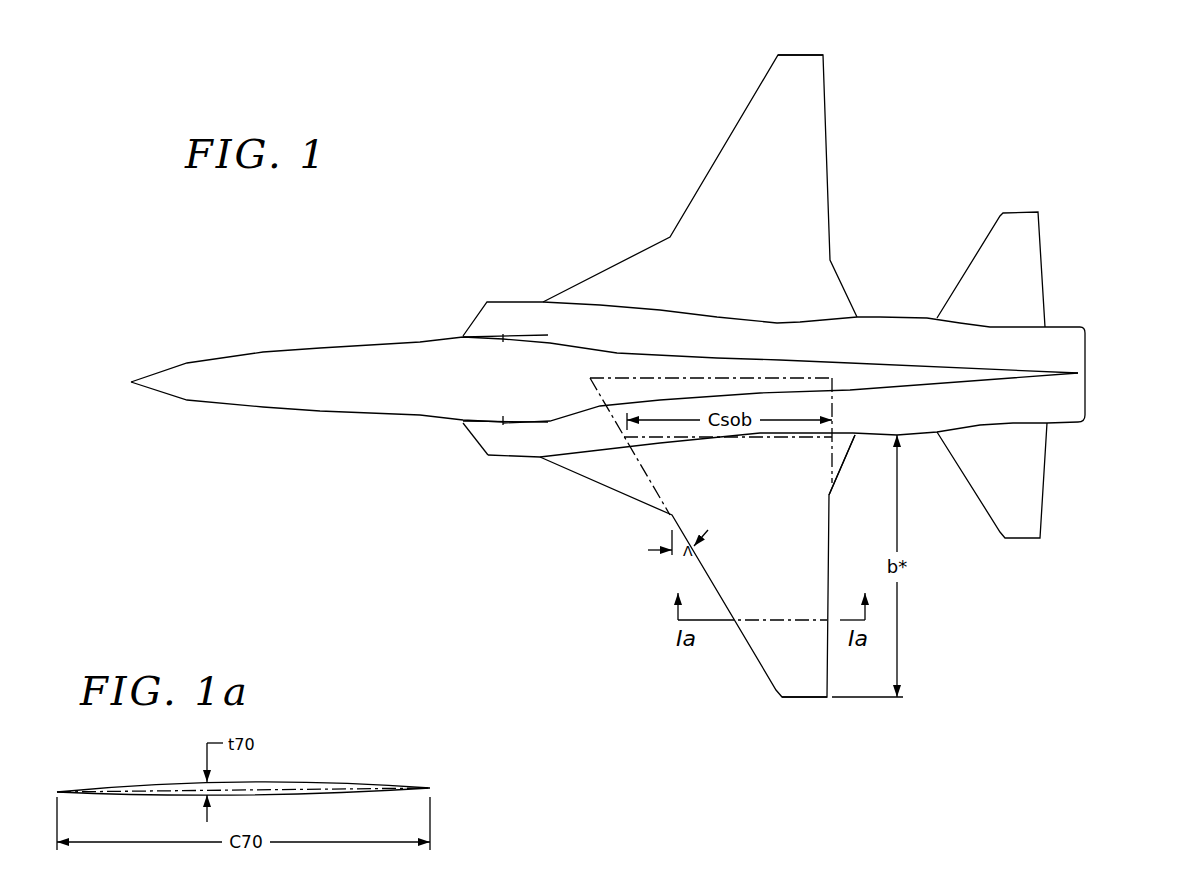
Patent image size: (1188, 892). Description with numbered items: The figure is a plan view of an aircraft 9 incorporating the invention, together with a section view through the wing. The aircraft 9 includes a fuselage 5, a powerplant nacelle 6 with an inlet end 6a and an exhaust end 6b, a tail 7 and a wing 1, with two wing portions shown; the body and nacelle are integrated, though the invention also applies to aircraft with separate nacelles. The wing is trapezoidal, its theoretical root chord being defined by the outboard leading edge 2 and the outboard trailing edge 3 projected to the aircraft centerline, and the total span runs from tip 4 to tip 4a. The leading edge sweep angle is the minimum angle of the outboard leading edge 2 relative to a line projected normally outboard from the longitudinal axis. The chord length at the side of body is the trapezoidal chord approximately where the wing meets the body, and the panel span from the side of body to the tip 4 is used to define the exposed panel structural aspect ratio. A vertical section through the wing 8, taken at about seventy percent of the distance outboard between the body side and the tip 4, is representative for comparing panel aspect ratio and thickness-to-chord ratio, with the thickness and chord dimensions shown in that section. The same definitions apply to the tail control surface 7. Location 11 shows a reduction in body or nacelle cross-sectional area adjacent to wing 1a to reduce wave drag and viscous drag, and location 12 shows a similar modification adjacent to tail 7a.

In FIG. 1, the wing 1 is at (752, 657).
In FIG. 1, the wing 1a is at (715, 163).
In FIG. 1, the outboard leading edge 2 is at (643, 468).
In FIG. 1, the outboard trailing edge 3 is at (833, 460).
In FIG. 1, the wing tip 4 is at (807, 700).
In FIG. 1, the wing tip 4a is at (808, 53).
In FIG. 1, the fuselage 5 is at (230, 407).
In FIG. 1, the powerplant nacelle 6 is at (518, 460).
In FIG. 1, the inlet end 6a is at (472, 437).
In FIG. 1, the exhaust end 6b is at (1087, 397).
In FIG. 1, the tail 7 is at (1047, 480).
In FIG. 1, the tail 7a is at (1047, 233).
In FIG. 1a, the wing section 8 is at (282, 781).
In FIG. 1, the aircraft 9 is at (265, 350).
In FIG. 1, the location of body area reduction 11 is at (782, 318).
In FIG. 1, the location of body area modification 12 is at (1007, 323).